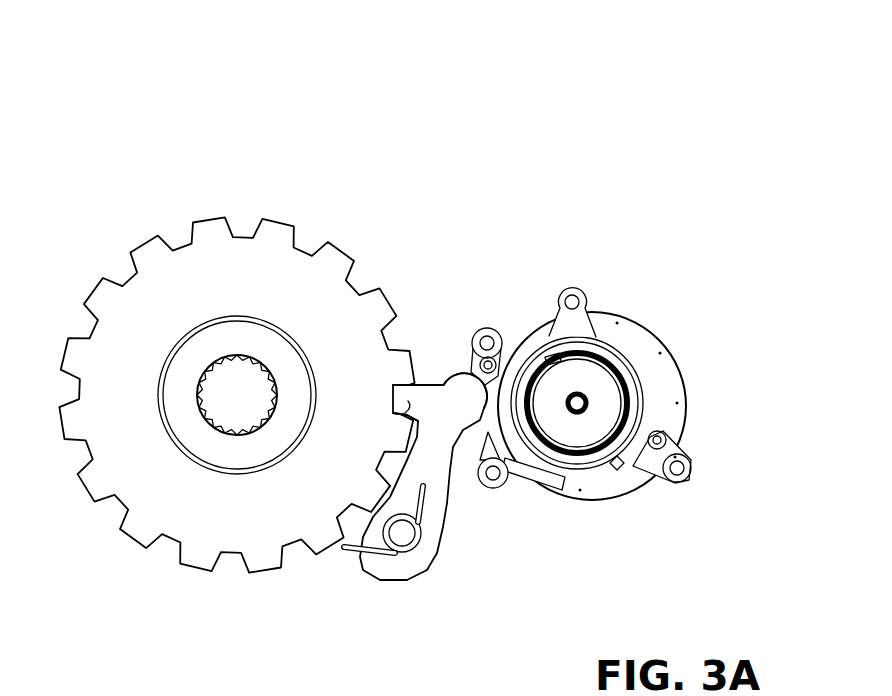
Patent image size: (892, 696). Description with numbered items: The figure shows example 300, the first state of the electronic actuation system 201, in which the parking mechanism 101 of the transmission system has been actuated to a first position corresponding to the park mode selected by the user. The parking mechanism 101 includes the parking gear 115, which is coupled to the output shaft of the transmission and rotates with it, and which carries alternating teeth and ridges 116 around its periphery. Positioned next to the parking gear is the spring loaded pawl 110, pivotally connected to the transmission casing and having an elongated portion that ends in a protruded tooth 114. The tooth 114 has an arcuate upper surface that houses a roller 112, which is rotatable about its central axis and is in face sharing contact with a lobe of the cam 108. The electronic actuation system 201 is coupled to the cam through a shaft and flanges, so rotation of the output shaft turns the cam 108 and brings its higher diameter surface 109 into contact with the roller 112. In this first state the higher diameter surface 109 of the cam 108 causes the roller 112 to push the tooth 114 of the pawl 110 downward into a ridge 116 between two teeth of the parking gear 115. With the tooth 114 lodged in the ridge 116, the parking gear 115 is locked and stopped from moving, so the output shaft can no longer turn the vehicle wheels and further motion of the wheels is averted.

The example 300 is at (708, 37).
The electronic actuation system 201 is at (331, 178).
The parking gear 115 is at (244, 510).
The parking mechanism 101 is at (706, 369).
The cam 108 is at (622, 352).
The higher diameter surface 109 is at (507, 427).
The roller 112 is at (460, 373).
The spring loaded pawl 110 is at (435, 523).
The ridge 116 is at (417, 385).
The tooth 114 is at (410, 400).